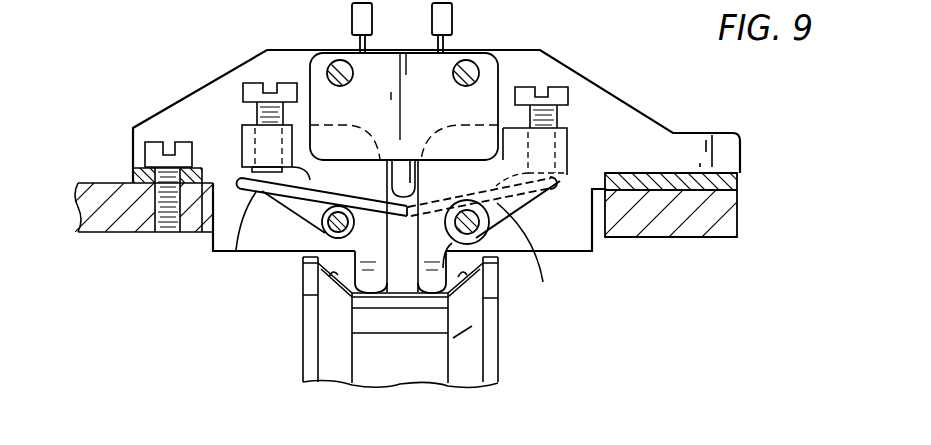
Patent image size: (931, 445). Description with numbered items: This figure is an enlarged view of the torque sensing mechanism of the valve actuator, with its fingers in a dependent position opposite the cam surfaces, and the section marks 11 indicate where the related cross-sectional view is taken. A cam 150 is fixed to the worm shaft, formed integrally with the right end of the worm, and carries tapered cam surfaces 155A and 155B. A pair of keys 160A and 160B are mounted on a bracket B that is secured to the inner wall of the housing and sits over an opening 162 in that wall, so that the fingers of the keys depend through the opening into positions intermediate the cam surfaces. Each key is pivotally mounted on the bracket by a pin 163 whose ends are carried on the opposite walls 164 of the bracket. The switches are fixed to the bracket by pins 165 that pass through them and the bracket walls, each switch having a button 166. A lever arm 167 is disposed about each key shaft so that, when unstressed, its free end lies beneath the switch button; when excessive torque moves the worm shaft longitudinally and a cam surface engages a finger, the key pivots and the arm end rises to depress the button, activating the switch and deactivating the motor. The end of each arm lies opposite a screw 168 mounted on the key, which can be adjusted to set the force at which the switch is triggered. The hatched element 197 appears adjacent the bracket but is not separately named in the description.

The cam 150 is at (383, 362).
The tapered cam surface 155A is at (345, 302).
The tapered cam surface 155B is at (480, 257).
The key 160A is at (308, 232).
The key 160B is at (497, 241).
The opening 162 is at (602, 208).
The pin 163 is at (473, 237).
The bracket wall 164 is at (583, 78).
The pin 165 is at (470, 70).
The button 166 is at (417, 195).
The lever arm 167 is at (257, 200).
The screw 168 is at (253, 88).
The mounting plate 197 is at (697, 237).
The bracket B is at (645, 115).
The section line 11- 11 is at (42, 280).